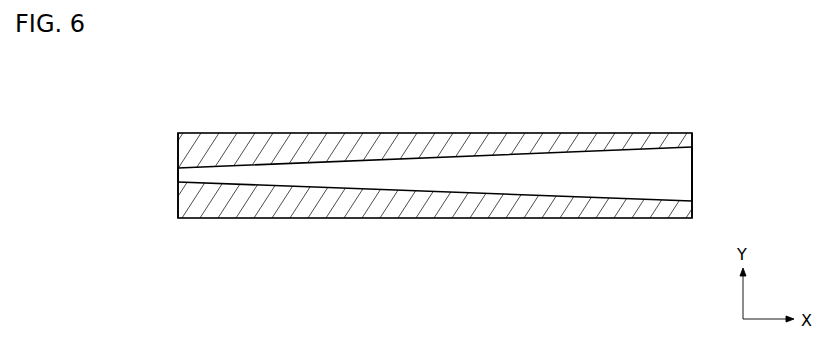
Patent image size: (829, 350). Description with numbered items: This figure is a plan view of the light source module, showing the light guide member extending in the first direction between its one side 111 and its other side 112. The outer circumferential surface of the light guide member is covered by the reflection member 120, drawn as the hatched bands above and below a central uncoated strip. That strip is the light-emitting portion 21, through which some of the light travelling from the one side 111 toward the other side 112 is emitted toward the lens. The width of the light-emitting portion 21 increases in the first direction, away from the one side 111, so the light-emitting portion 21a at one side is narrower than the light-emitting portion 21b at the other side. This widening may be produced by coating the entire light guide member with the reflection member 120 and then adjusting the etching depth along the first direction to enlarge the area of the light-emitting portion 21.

The one side of the light guide member 111 is at (178, 133).
The other side of the light guide member 112 is at (692, 133).
The reflection member 120 is at (473, 147).
The light-emitting portion 21 is at (495, 182).
The light-emitting portion at one side 21a is at (188, 175).
The light-emitting portion at the other side 21b is at (683, 172).